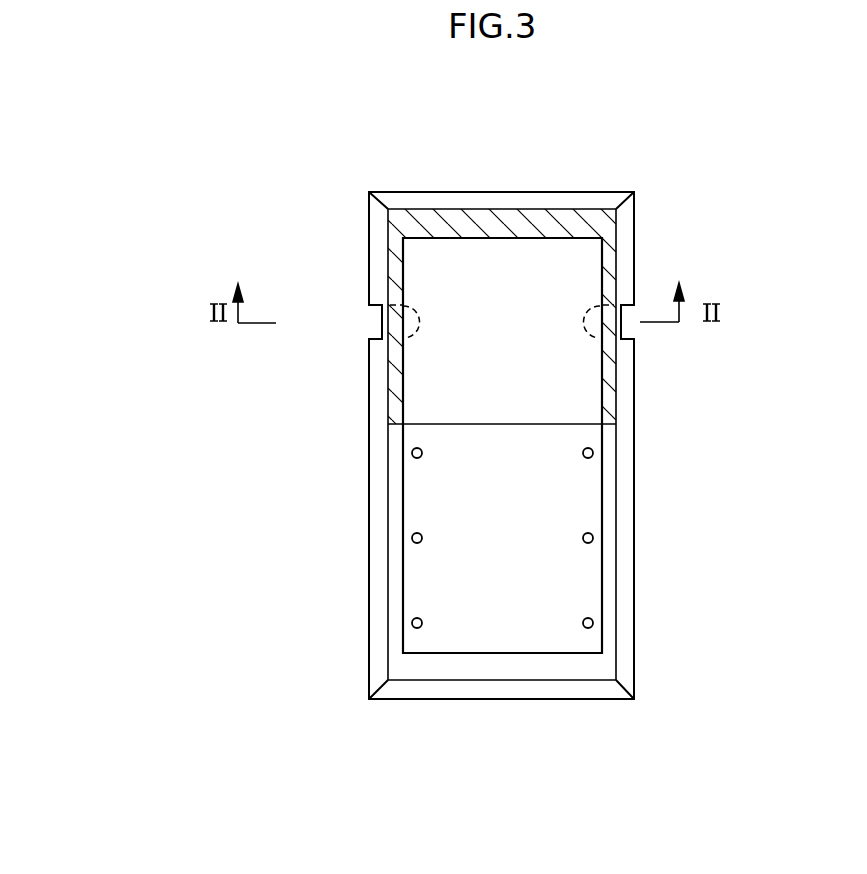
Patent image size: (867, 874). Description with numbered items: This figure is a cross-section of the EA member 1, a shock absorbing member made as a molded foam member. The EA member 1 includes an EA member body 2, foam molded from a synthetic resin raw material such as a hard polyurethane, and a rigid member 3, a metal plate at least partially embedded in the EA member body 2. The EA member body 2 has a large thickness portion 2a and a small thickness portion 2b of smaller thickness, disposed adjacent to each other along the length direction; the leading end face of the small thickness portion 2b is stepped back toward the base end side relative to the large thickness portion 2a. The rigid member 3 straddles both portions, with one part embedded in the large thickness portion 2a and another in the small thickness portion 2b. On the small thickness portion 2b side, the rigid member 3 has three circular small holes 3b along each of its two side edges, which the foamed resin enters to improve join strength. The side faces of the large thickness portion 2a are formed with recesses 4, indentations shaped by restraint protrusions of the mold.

The EA member 1 is at (373, 147).
The EA member body 2 is at (600, 701).
The large thickness portion 2a is at (335, 192).
The small thickness portion 2b is at (335, 435).
The rigid member 3 is at (505, 628).
The small holes 3b is at (418, 458).
The recesses 4 is at (418, 311).